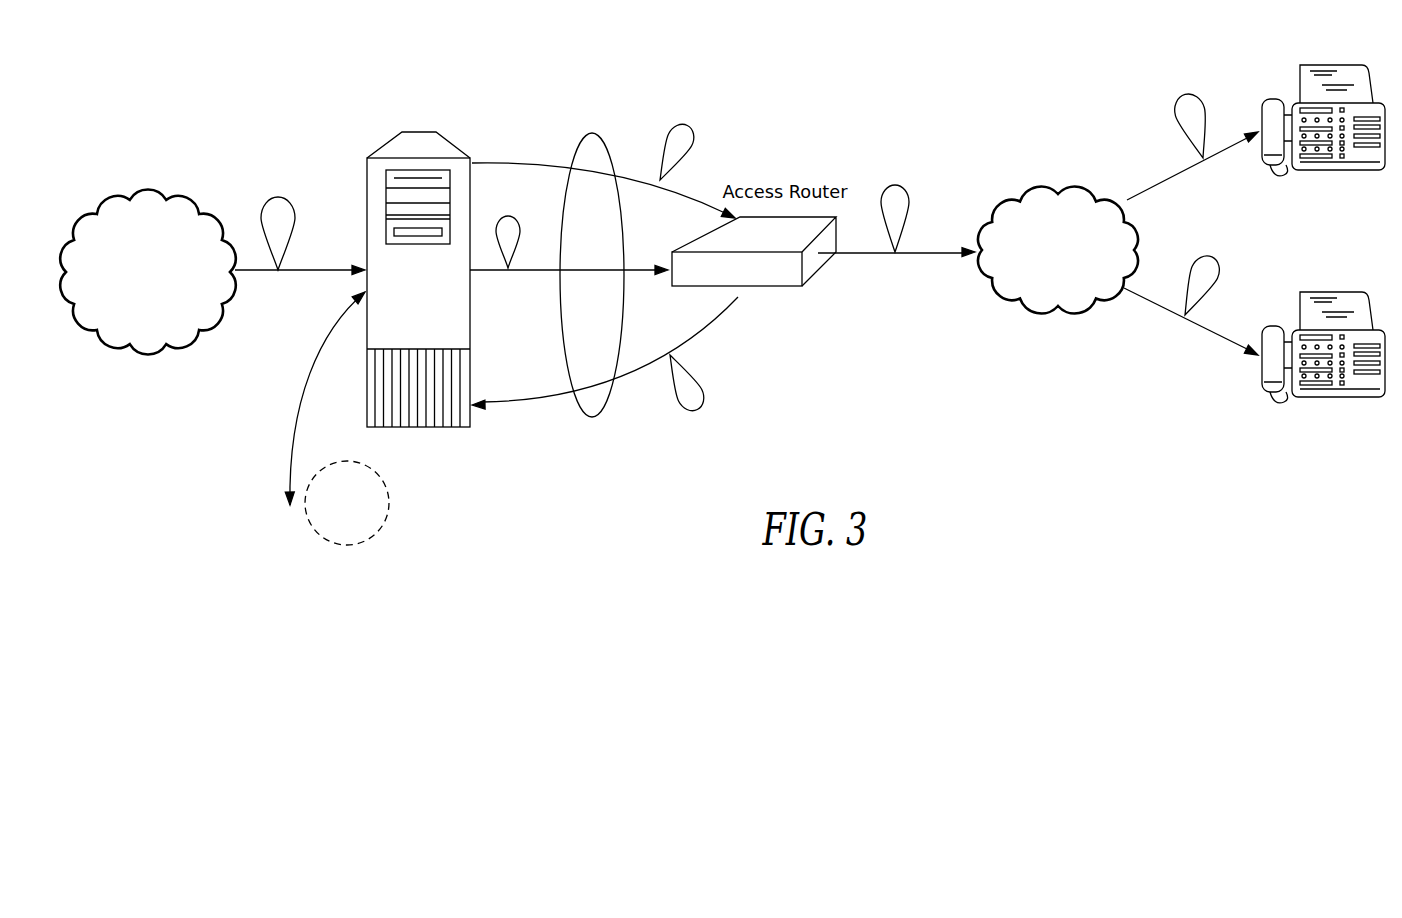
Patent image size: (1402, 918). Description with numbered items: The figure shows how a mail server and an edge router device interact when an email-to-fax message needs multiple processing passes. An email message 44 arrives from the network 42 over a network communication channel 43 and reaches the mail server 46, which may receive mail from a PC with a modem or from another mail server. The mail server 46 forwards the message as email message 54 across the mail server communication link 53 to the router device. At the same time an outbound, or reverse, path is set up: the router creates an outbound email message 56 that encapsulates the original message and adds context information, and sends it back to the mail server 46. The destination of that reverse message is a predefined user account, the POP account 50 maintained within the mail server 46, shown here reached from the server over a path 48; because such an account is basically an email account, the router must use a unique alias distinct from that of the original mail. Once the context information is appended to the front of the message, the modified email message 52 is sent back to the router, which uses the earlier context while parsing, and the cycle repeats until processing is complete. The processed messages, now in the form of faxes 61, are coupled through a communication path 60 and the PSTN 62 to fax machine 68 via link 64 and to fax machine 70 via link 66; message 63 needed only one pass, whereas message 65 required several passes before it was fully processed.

The network 42 is at (142, 347).
The network communication channel 43 is at (315, 267).
The email message 44 is at (281, 197).
The mail server 46 is at (455, 148).
The POP connection 48 is at (290, 420).
The POP (post office protocol) access 50 is at (389, 501).
The modified email message 52 is at (688, 121).
The mail server communication link 53 is at (598, 412).
The email message 54 is at (511, 217).
The outbound email message 56 is at (706, 391).
The communication path 60 is at (934, 262).
The faxes 61 is at (900, 185).
The PSTN 62 is at (1048, 307).
The message 63 is at (1177, 97).
The link 64 is at (1160, 182).
The message 65 is at (1220, 258).
The link 66 is at (1226, 344).
The fax machine 68 is at (1357, 172).
The fax machine 70 is at (1363, 398).